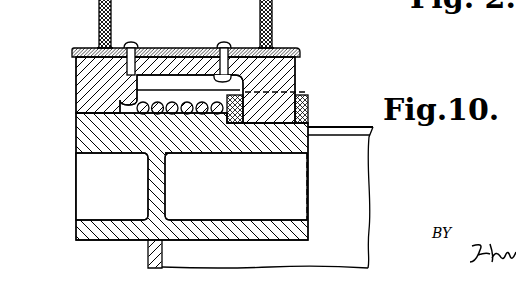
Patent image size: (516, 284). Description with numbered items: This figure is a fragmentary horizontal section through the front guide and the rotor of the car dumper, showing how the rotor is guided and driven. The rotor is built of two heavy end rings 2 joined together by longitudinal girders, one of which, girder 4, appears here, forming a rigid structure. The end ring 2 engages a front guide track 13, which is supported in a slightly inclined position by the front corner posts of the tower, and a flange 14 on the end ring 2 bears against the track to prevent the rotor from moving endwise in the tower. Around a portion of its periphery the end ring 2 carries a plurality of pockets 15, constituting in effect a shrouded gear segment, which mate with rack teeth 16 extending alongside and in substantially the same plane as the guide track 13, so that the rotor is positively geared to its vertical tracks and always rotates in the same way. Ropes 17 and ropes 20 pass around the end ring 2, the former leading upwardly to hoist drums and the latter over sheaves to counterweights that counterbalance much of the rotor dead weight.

The end ring 2 is at (76, 134).
The longitudinal girder 4 is at (347, 161).
The front guide track 13 is at (76, 90).
The flange 14 is at (137, 98).
The pocket 15 is at (308, 95).
The rack tooth 16 is at (292, 88).
The rope 17 is at (222, 99).
The rope 20 is at (202, 114).